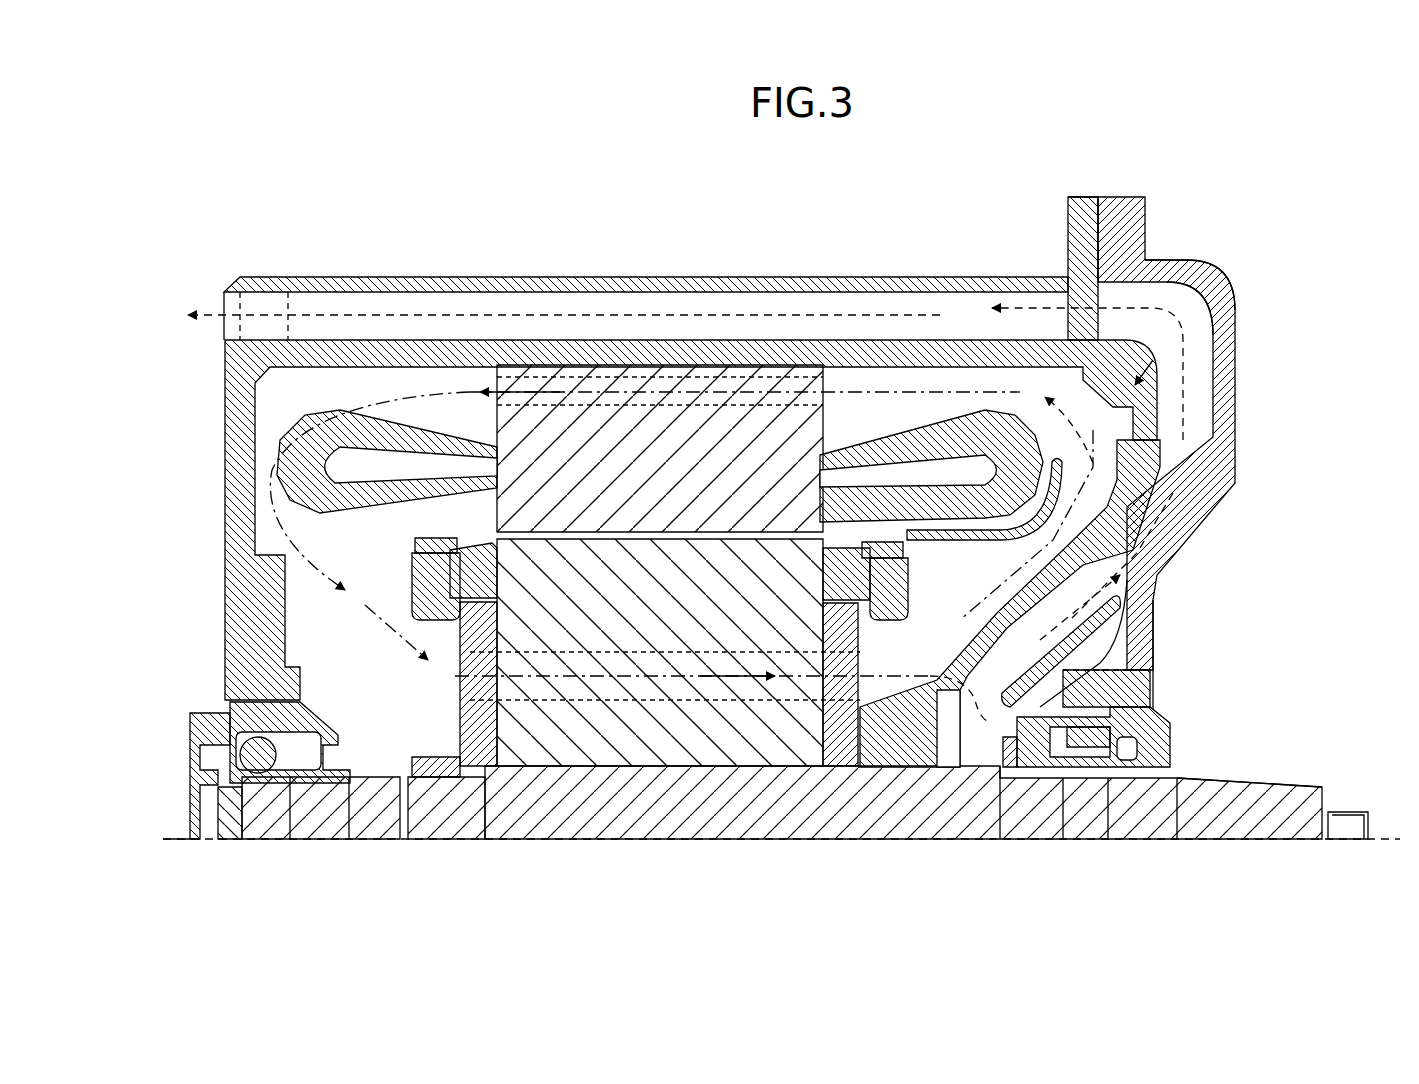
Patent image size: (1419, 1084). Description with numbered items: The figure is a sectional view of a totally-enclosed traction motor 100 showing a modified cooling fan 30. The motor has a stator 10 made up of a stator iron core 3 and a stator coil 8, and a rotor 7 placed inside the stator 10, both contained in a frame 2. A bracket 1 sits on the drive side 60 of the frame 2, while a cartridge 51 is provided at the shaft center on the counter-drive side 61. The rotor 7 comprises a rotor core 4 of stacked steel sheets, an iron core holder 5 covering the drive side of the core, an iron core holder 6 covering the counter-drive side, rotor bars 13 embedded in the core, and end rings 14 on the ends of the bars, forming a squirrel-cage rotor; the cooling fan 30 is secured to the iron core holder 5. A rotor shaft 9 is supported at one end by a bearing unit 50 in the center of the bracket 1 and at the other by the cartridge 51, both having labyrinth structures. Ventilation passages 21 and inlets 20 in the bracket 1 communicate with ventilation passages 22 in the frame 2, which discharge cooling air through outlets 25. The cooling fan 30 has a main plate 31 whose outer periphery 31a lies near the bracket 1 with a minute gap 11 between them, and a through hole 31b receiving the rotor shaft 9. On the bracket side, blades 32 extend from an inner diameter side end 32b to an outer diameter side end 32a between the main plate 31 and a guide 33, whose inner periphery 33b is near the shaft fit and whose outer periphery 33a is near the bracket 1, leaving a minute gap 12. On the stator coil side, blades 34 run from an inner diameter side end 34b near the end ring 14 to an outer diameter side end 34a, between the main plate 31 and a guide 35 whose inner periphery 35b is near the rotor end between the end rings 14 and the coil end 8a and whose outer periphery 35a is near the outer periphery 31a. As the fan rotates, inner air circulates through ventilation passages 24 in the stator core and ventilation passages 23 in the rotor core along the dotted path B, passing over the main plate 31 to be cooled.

The totally-enclosed traction motor 100 is at (797, 198).
The bracket 1 is at (1237, 337).
The frame 2 is at (738, 278).
The stator iron core 3 is at (655, 430).
The rotor core 4 is at (640, 766).
The iron core holder 5 is at (845, 760).
The iron core holder 6 is at (475, 760).
The rotor 7 is at (527, 560).
The stator coil 8 is at (908, 443).
The coil end 8a is at (952, 445).
The rotor shaft 9 is at (1247, 838).
The stator 10 is at (703, 410).
The minute gap 11 is at (1200, 345).
The minute gap 12 is at (1160, 596).
The rotor bars 13 is at (443, 578).
The end rings 14 is at (420, 570).
The inlets 20 is at (1160, 637).
The ventilation passages 21 is at (1187, 310).
The ventilation passages 22 is at (833, 305).
The ventilation passages 23 is at (775, 760).
The ventilation passages 24 is at (580, 380).
The outlets 25 is at (222, 300).
The cooling fan 30 is at (1035, 470).
The main plate 31 is at (1085, 513).
The outer periphery 31a is at (1040, 473).
The through hole 31b is at (935, 700).
The blades 32 is at (1130, 535).
The outer diameter side end 32a is at (1135, 558).
The inner diameter side end 32b is at (975, 700).
The guide 33 is at (1150, 607).
The outer periphery 33a is at (1145, 578).
The inner periphery 33b is at (1120, 693).
The blades 34 is at (1110, 538).
The outer diameter side end 34a is at (1095, 450).
The inner diameter side end 34b is at (907, 690).
The guide 35 is at (1075, 490).
The outer periphery 35a is at (1060, 456).
The inner periphery 35b is at (893, 482).
The bearing unit 50 is at (1195, 755).
The cartridge 51 is at (185, 741).
The drive side 60 is at (1363, 843).
The counter-drive side 61 is at (179, 854).
The inner air circulation path B is at (585, 680).